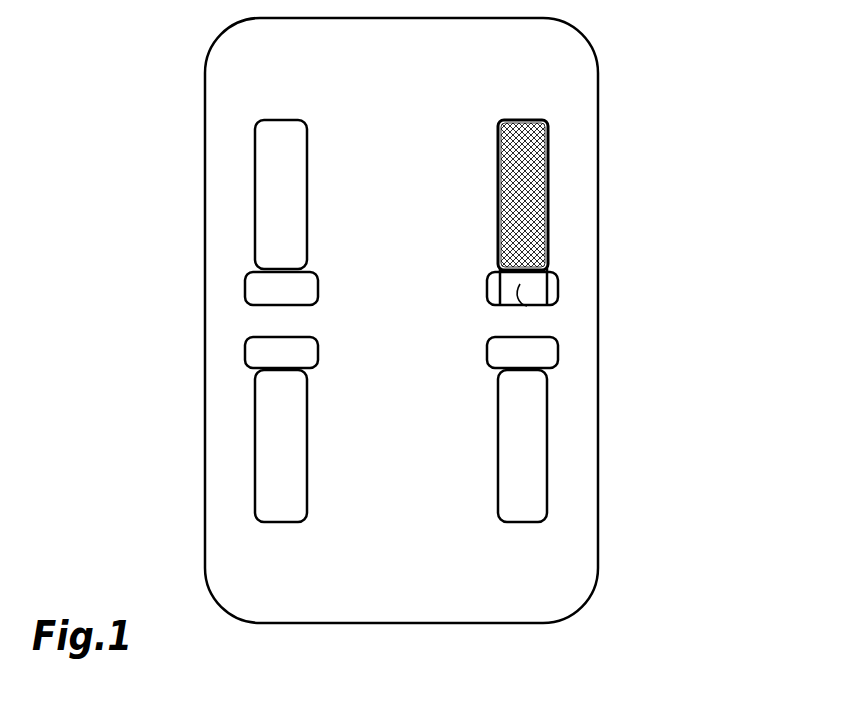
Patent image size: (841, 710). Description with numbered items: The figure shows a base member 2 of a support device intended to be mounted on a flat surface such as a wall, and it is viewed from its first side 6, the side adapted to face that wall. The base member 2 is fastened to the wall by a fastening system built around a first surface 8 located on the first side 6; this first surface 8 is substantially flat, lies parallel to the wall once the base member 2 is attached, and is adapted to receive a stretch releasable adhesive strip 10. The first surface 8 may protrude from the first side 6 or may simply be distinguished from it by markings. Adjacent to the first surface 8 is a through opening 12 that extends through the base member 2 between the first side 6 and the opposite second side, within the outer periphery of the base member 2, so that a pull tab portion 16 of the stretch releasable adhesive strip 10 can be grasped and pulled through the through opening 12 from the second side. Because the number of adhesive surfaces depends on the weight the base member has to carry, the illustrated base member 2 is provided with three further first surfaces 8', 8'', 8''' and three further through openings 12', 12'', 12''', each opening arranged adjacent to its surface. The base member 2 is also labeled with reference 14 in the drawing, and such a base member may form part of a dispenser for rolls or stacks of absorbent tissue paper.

The base member 2 is at (654, 100).
The first side 6 is at (321, 89).
The first surface 8 is at (540, 212).
The further first surface 8' is at (281, 194).
The further first surface 8'' is at (281, 446).
The further first surface 8''' is at (522, 446).
The stretch releasable adhesive strip 10 is at (518, 202).
The through opening 12 is at (498, 286).
The further through opening 12' is at (307, 283).
The further through opening 12'' is at (310, 349).
The further through opening 12''' is at (495, 348).
The housing wall 14 is at (203, 243).
The pull tab portion 16 is at (527, 306).